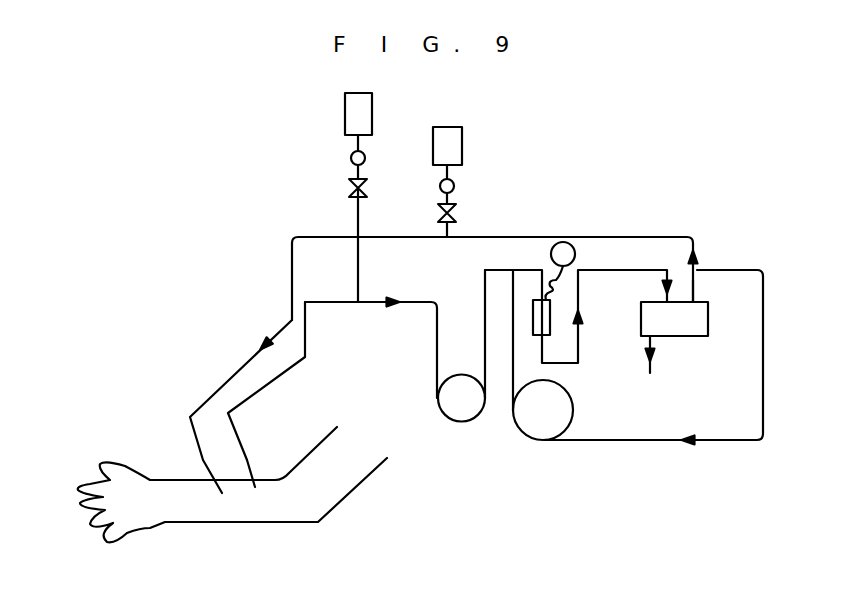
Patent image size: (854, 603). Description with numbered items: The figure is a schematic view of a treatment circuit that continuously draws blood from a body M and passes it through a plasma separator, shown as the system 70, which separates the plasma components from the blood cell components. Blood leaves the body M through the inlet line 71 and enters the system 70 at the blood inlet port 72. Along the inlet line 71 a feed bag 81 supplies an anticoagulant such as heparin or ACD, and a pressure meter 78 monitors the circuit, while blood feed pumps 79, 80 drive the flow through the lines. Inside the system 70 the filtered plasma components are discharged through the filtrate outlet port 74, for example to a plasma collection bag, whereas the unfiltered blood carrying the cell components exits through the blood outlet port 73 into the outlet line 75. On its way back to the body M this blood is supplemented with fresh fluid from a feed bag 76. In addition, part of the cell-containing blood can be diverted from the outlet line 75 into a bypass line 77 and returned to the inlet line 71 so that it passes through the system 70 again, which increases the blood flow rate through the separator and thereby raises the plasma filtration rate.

The system 70 is at (692, 336).
The inlet line 71 is at (300, 372).
The blood inlet port 72 is at (665, 290).
The blood outlet port 73 is at (694, 284).
The filtrate outlet port 74 is at (653, 343).
The outlet line 75 is at (641, 237).
The feed bag 76 is at (462, 138).
The bypass line 77 is at (763, 390).
The pressure meter 78 is at (563, 242).
The blood feed pump 79 is at (462, 422).
The blood feed pump 80 is at (538, 440).
The feed bag 81 is at (372, 105).
The body M is at (366, 479).